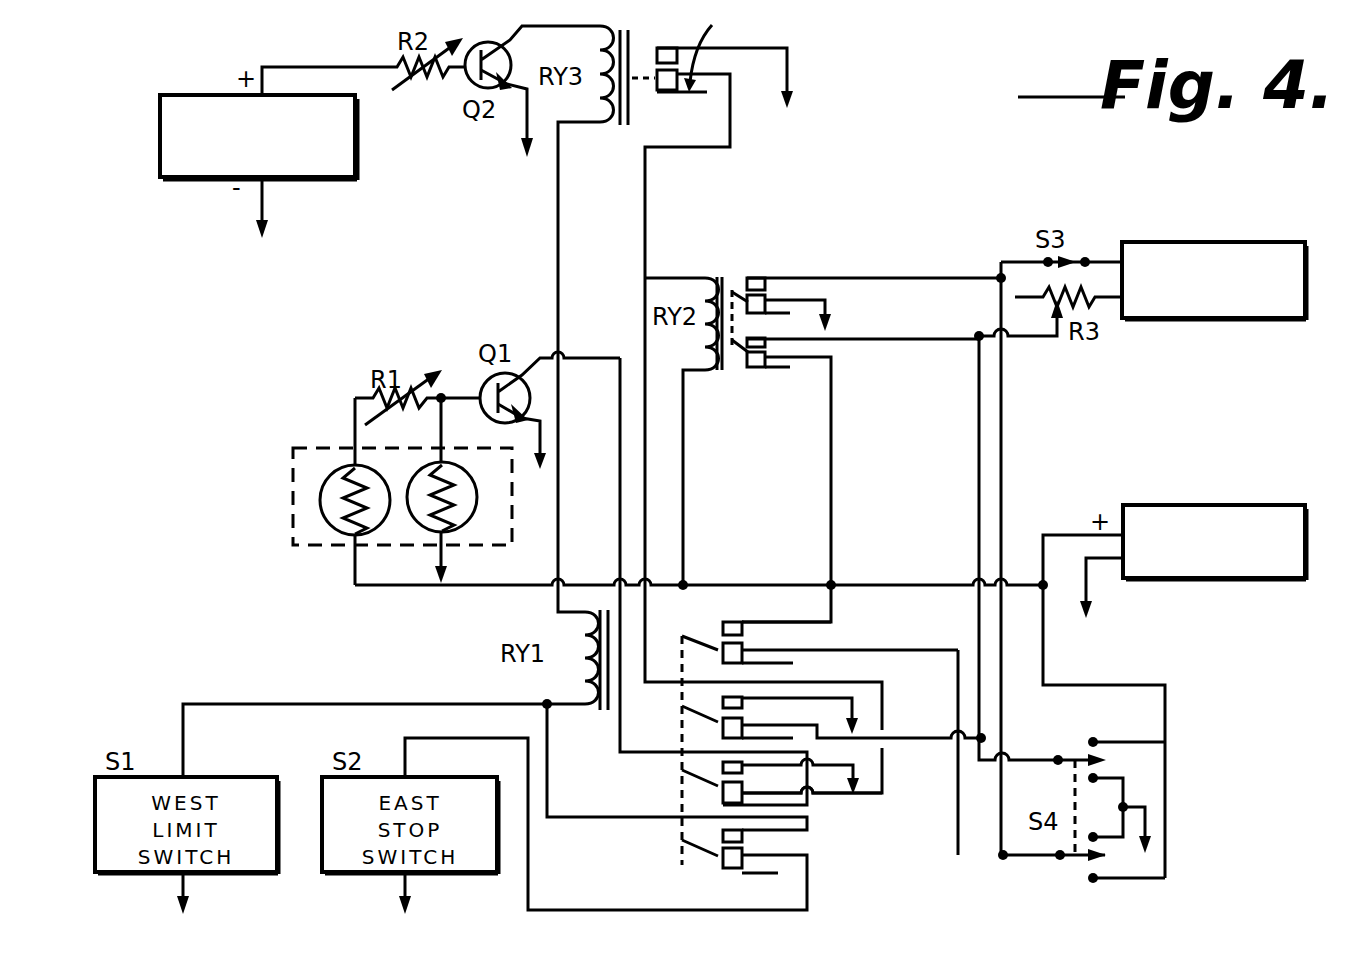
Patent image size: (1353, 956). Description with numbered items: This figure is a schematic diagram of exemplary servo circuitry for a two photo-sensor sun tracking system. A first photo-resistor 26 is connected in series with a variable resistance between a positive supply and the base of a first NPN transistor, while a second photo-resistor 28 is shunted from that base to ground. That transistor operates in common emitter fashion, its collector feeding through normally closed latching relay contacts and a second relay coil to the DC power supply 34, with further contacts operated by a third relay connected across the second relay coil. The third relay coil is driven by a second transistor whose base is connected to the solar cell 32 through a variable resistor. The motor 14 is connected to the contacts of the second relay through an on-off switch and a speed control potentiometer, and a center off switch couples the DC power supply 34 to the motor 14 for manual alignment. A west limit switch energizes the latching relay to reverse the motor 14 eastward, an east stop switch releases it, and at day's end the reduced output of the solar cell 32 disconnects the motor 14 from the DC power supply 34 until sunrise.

The solar cell 32 is at (173, 91).
The motor 14 is at (1303, 231).
The DC power supply 34 is at (1252, 506).
The photo-resistor 26 is at (350, 470).
The photo-resistor 28 is at (467, 522).